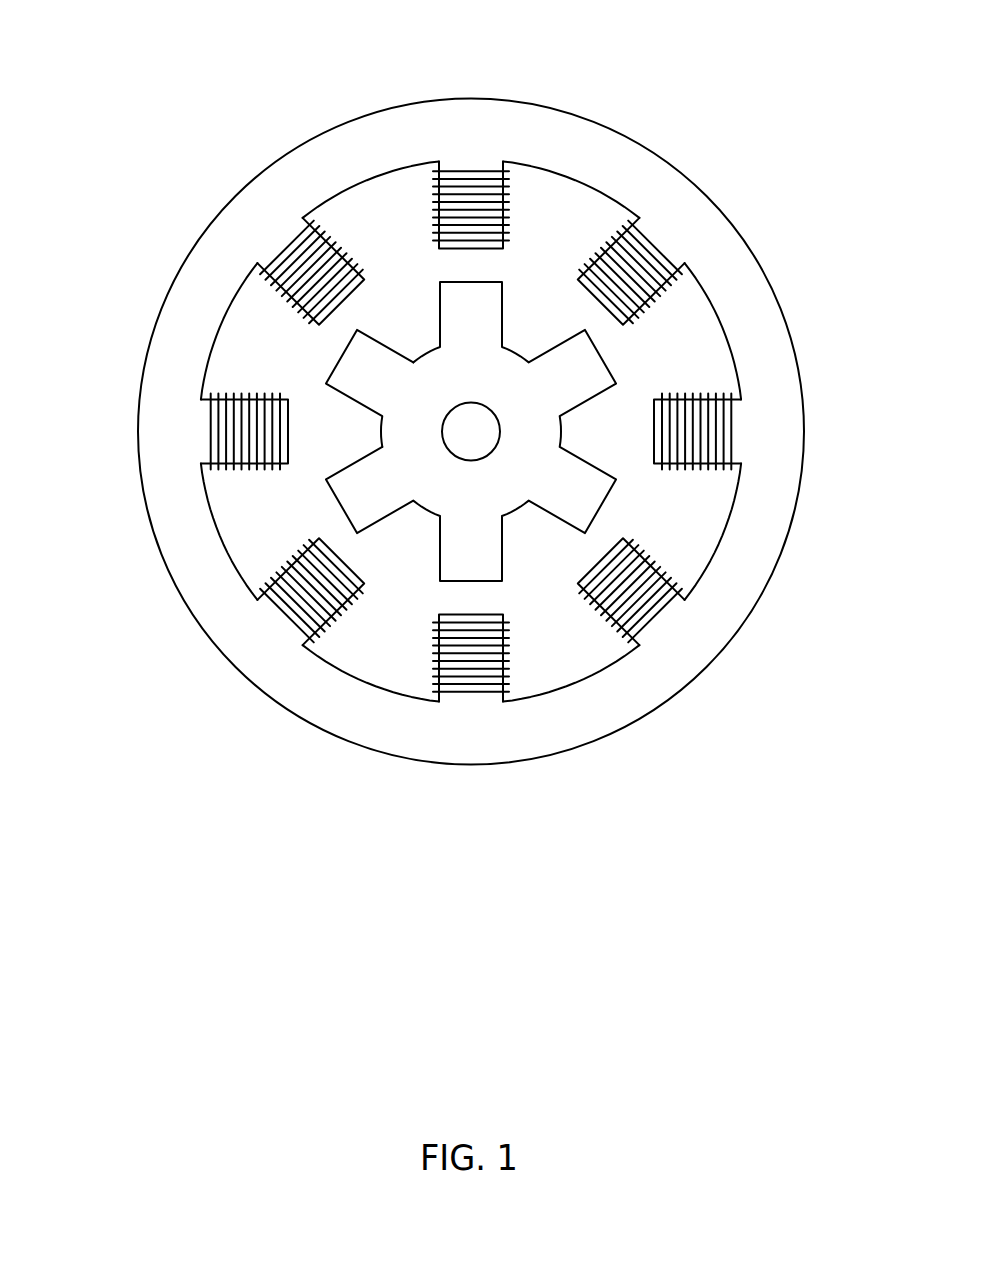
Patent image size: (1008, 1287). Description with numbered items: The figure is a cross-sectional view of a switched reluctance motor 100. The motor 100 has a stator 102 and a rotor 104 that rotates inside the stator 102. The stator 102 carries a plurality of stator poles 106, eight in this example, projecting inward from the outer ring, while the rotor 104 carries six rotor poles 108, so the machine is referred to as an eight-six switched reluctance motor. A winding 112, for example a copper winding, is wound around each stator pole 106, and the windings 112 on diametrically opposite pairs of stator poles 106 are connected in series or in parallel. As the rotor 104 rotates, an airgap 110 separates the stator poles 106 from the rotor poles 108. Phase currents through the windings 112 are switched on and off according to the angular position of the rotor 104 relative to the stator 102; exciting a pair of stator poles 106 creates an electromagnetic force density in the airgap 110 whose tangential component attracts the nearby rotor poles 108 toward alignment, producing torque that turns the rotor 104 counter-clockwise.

The switched reluctance motor 100 is at (364, 26).
The stator 102 is at (528, 117).
The rotor 104 is at (509, 377).
The stator pole 106 is at (687, 407).
The rotor pole 108 is at (347, 382).
The airgap 110 is at (272, 525).
The winding 112 is at (437, 652).